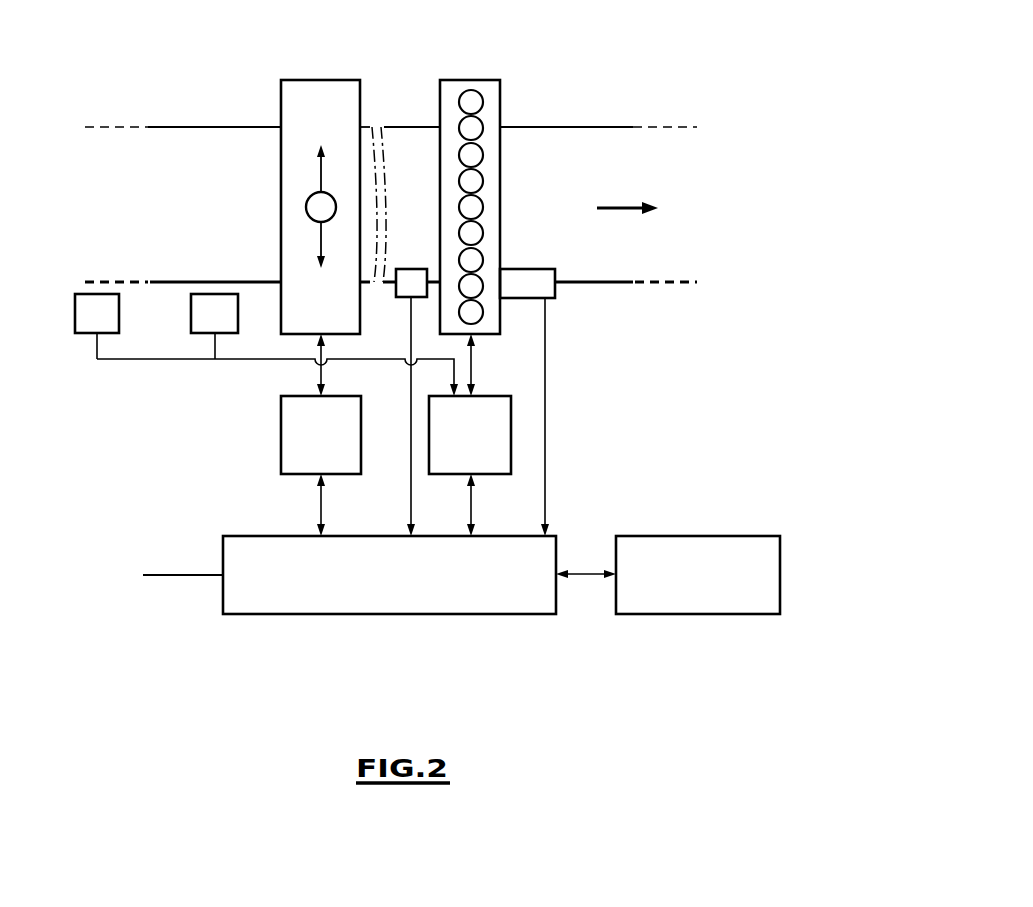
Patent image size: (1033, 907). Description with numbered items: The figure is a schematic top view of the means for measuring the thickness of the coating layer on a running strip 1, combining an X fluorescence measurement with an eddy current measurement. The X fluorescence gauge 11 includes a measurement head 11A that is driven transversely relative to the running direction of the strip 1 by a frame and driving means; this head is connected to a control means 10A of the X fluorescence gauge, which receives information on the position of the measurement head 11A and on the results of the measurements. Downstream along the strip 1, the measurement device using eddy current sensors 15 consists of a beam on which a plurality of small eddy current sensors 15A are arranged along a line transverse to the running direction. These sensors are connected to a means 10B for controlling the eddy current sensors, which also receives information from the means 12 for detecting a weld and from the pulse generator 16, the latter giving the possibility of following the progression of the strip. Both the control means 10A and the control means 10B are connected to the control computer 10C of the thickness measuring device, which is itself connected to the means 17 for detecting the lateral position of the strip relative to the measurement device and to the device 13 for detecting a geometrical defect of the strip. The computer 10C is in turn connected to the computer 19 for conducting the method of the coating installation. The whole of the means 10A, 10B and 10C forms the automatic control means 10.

The strip 1 is at (117, 144).
The automatic control means 10 is at (190, 493).
The control means of the X fluorescence gauge 10A is at (284, 457).
The means for controlling the eddy current sensors 10B is at (505, 457).
The control computer 10C is at (383, 603).
The X fluorescence gauge 11 is at (290, 94).
The measurement head 11A is at (330, 194).
The means for detecting a weld 12 is at (78, 322).
The device for detecting a geometrical defect of the strip 13 is at (401, 293).
The measurement device using eddy current sensors 15 is at (500, 81).
The eddy current sensors 15A is at (471, 99).
The pulse generator 16 is at (192, 320).
The means for detecting the lateral position of the strip 17 is at (552, 290).
The computer for conducting the method 19 is at (690, 603).